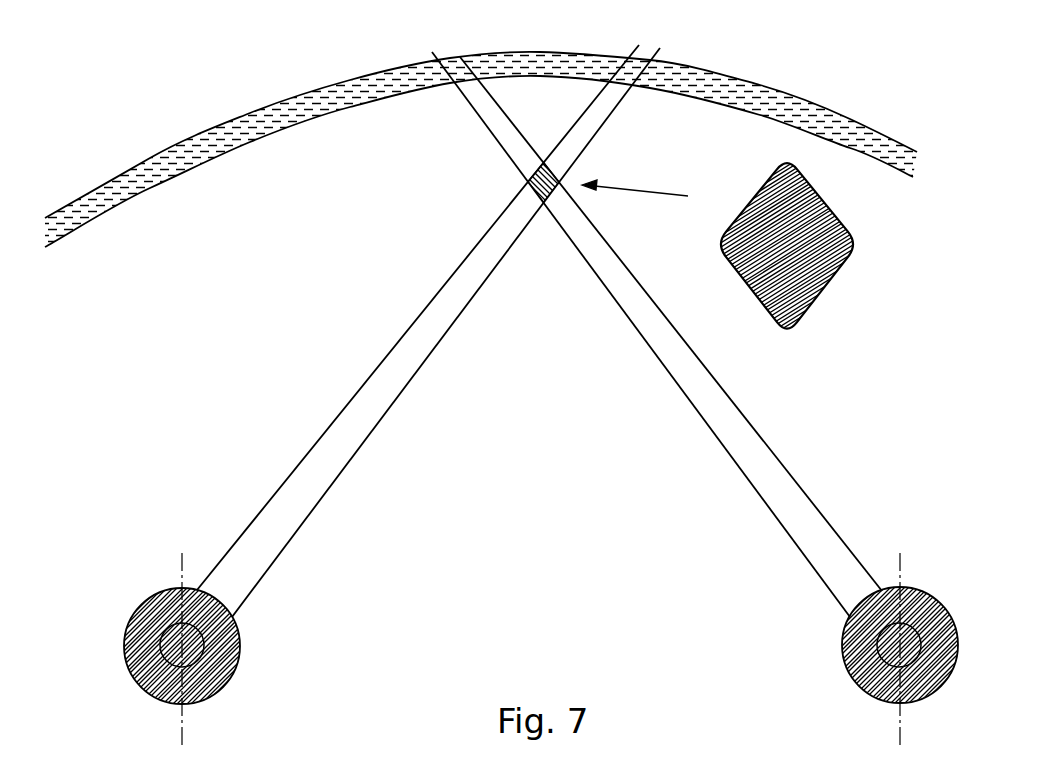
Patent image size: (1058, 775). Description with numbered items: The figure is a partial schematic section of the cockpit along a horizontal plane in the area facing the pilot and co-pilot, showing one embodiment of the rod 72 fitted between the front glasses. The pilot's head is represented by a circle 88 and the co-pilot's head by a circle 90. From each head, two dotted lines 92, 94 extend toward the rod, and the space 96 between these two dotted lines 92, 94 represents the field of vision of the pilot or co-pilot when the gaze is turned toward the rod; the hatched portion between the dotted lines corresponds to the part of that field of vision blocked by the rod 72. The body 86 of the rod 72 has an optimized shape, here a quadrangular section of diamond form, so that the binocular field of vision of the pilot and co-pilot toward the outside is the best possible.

The rod 72 is at (528, 181).
The body of the rod 86 is at (790, 210).
The circle representing the pilot's head 88 is at (152, 625).
The circle representing the co-pilot's head 90 is at (880, 640).
The dotted line 92 is at (278, 488).
The dotted line 94 is at (325, 492).
The space of the field of vision 96 is at (713, 410).